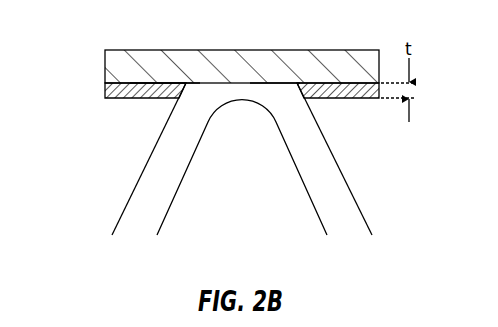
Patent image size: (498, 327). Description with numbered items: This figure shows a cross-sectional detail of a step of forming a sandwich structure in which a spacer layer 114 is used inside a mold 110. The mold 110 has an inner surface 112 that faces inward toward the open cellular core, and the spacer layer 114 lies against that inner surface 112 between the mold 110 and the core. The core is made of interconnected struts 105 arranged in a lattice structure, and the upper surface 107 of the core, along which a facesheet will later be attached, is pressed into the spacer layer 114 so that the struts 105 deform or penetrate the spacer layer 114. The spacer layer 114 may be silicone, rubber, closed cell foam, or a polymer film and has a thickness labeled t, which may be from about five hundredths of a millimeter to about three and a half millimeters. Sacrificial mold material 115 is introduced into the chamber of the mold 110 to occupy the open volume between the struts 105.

The struts 105 is at (145, 170).
The upper surface 107 is at (272, 82).
The mold 110 is at (242, 70).
The inner surface 112 is at (147, 83).
The spacer layer 114 is at (106, 93).
The sacrificial mold material 115 is at (242, 175).